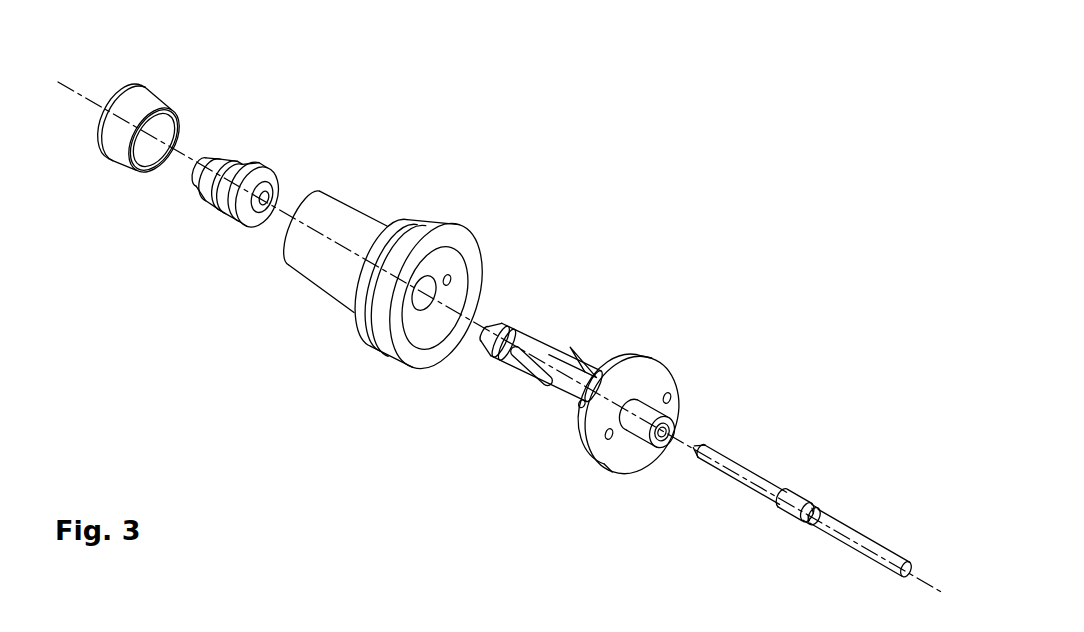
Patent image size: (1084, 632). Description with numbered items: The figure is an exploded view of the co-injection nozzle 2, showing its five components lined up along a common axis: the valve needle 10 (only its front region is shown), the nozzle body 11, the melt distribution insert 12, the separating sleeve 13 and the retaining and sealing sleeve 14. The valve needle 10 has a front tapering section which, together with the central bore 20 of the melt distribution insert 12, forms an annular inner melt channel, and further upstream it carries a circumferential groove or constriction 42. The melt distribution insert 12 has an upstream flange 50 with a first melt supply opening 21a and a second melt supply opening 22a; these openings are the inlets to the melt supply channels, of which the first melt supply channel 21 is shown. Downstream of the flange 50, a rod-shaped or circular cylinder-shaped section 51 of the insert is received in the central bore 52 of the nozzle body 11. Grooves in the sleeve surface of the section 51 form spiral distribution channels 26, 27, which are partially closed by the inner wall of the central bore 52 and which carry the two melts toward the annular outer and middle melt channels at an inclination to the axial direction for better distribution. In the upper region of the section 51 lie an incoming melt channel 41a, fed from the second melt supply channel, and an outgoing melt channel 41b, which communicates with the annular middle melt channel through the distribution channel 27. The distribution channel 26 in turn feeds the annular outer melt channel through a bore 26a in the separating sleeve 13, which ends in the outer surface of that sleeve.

The co-injection nozzle 2 is at (501, 335).
The valve needle 10 is at (802, 467).
The nozzle body 11 is at (407, 242).
The melt distribution insert 12 is at (679, 343).
The separating sleeve 13 is at (292, 132).
The retaining and sealing sleeve 14 is at (189, 92).
The central bore 20 is at (683, 498).
The first melt supply channel 21 is at (513, 250).
The first melt supply opening 21a is at (736, 365).
The second melt supply opening 22a is at (568, 500).
The distribution channel 26 is at (485, 389).
The bore 26a is at (197, 241).
The distribution channel 27 is at (574, 315).
The incoming melt channel 41a is at (513, 458).
The outgoing melt channel 41b is at (638, 331).
The circumferential groove 42 is at (859, 482).
The upstream flange 50 is at (626, 485).
The rod-shaped section 51 is at (489, 422).
The central bore 52 is at (389, 338).